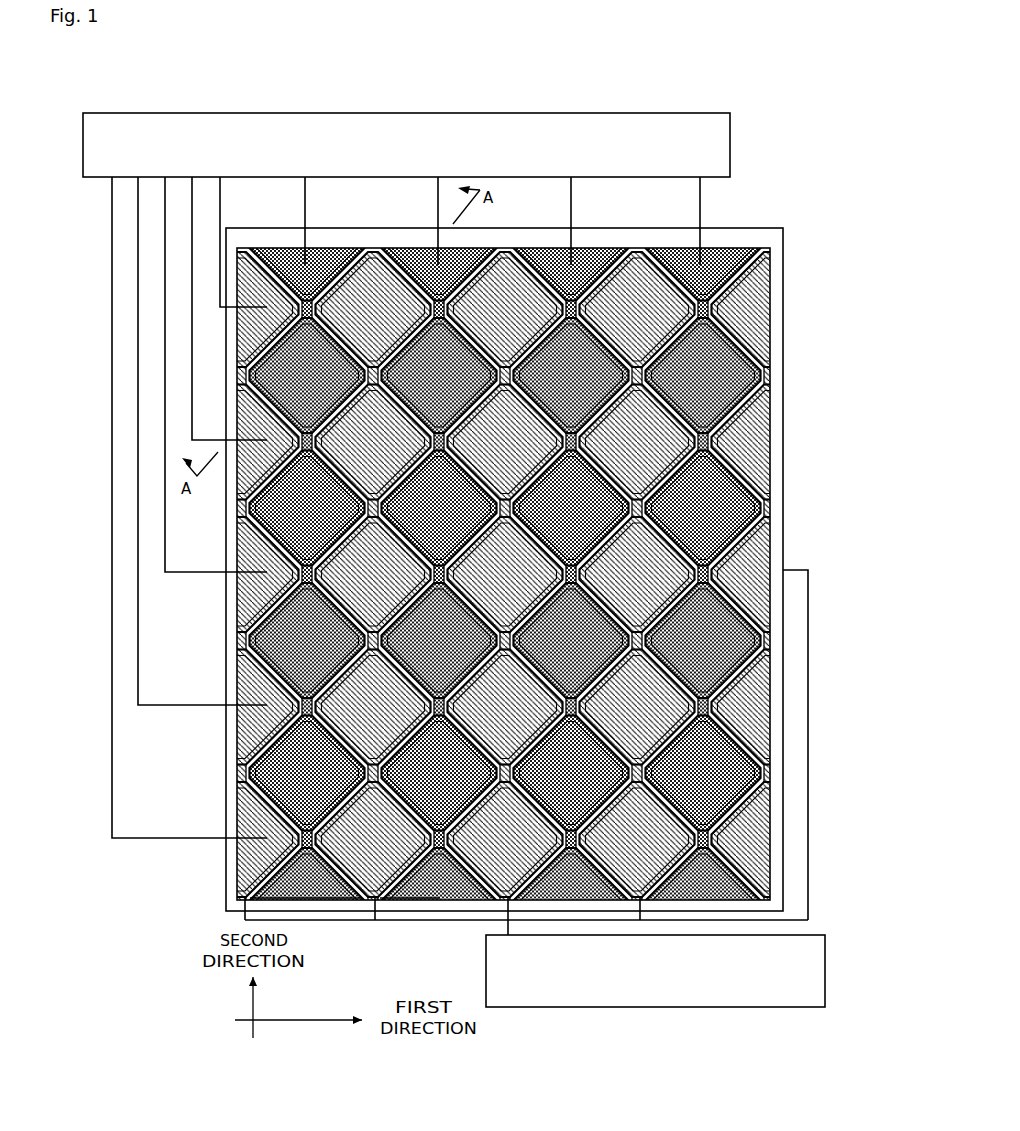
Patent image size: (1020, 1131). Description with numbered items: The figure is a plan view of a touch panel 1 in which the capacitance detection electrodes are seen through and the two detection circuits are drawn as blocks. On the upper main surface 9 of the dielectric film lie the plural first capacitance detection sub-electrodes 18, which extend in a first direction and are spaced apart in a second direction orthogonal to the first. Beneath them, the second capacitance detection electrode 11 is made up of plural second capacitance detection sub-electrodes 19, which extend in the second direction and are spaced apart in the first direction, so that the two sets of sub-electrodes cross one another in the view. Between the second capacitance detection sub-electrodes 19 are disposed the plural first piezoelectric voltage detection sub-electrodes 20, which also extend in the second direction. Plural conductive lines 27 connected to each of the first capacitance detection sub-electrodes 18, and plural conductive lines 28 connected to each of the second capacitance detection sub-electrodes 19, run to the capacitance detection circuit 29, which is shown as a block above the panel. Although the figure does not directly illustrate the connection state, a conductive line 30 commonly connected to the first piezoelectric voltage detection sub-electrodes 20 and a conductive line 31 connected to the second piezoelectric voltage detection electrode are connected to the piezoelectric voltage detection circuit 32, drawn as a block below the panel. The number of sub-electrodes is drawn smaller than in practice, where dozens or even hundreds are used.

The touch panel 1 is at (743, 226).
The upper main surface 9 is at (772, 272).
The second capacitance detection electrode 11 is at (408, 899).
The first capacitance detection sub-electrodes 18 is at (757, 451).
The second capacitance detection sub-electrodes 19 is at (336, 899).
The first piezoelectric voltage detection sub-electrodes 20 is at (771, 373).
The conductive lines 27 is at (178, 843).
The conductive lines 28 is at (572, 212).
The capacitance detection circuit 29 is at (470, 112).
The conductive line 30 is at (508, 922).
The conductive line 31 is at (793, 567).
The piezoelectric voltage detection circuit 32 is at (612, 1008).